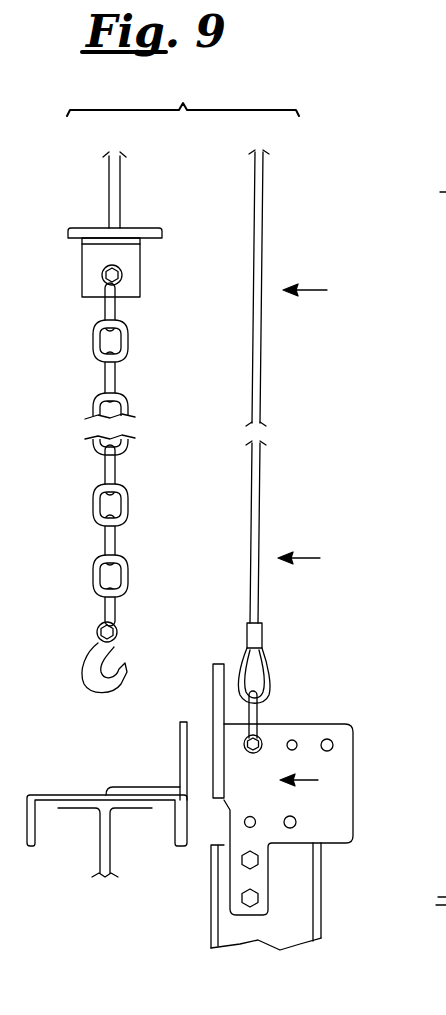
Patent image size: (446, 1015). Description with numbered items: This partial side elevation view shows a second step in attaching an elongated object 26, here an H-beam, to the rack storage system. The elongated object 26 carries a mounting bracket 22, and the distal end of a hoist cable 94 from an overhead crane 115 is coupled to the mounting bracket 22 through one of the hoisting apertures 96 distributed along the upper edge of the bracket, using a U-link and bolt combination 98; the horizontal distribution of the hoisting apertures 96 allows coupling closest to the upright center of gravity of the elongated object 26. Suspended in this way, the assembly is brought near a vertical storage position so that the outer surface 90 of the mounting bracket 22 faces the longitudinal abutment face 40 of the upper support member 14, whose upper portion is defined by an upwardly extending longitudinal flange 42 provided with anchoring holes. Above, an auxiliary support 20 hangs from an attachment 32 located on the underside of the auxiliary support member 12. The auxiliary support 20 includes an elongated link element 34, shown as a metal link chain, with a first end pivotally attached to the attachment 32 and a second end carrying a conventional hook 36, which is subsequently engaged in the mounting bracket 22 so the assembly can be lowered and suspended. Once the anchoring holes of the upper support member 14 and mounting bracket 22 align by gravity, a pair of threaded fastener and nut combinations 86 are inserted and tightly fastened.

The auxiliary support member 12 is at (129, 204).
The upper support member 14 is at (63, 785).
The auxiliary support 20 is at (151, 454).
The mounting bracket 22 is at (300, 808).
The elongated object 26 is at (332, 867).
The attachment 32 is at (128, 272).
The elongated link element 34 is at (125, 511).
The hook 36 is at (98, 652).
The longitudinal abutment face 40 is at (190, 725).
The longitudinal flange 42 is at (182, 722).
The threaded fastener and nut combination 86 is at (246, 901).
The outer surface 90 is at (212, 683).
The hoist cable 94 is at (258, 484).
The hoisting aperture 96 is at (330, 742).
The U-link and bolt combination 98 is at (258, 713).
The overhead crane 115 is at (393, 173).